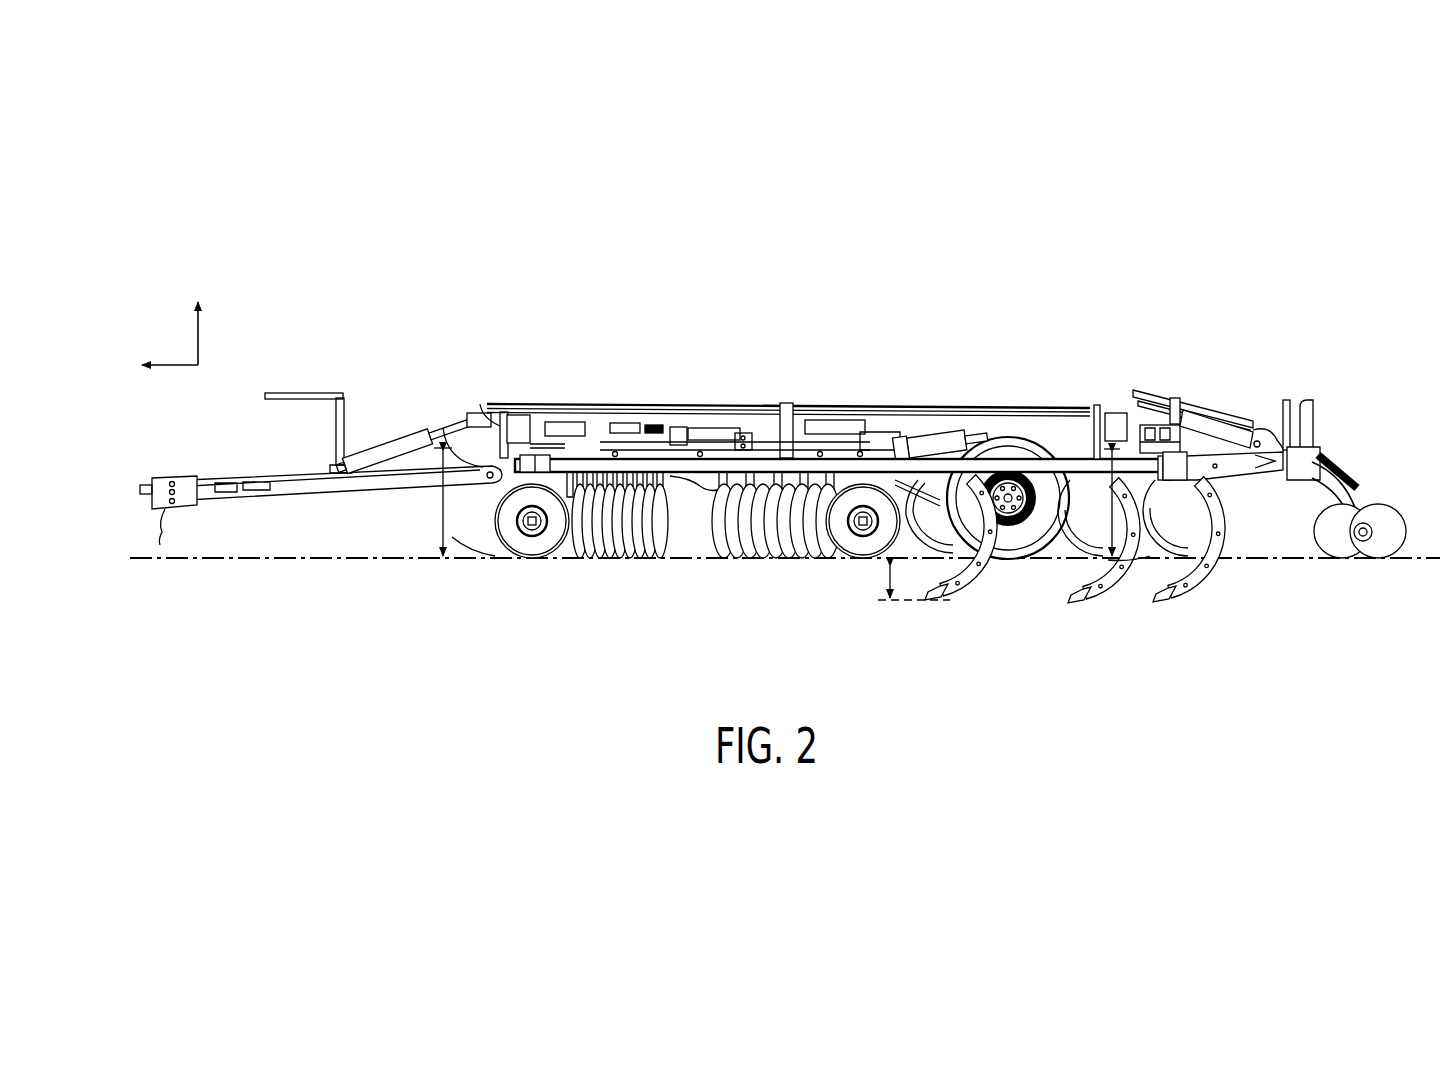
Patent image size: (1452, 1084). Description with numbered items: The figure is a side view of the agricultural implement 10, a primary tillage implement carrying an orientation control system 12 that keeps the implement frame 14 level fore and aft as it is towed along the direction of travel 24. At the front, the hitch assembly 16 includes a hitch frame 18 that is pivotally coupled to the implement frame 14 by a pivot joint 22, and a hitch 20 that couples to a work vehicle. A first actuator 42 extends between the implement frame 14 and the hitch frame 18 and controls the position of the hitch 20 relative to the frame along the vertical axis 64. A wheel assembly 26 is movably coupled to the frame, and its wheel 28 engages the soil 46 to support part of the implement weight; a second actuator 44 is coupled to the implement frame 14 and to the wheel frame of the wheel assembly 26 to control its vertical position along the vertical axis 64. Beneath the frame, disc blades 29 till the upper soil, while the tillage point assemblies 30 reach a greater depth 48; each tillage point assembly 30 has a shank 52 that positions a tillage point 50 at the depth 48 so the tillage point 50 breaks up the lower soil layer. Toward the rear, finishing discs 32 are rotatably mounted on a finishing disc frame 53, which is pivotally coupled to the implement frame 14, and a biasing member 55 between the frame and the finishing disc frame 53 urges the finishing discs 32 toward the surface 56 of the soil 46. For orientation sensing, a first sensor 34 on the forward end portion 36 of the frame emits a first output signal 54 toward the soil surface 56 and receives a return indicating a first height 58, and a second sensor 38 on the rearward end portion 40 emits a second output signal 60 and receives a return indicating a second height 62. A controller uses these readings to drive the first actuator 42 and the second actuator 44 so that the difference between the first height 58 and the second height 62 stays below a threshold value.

The agricultural implement 10 is at (456, 302).
The orientation control system 12 is at (321, 428).
The frame 14 is at (818, 423).
The hitch assembly 16 is at (344, 469).
The hitch frame 18 is at (378, 487).
The hitch 20 is at (175, 479).
The pivot joint 22 is at (487, 472).
The direction of travel 24 is at (186, 365).
The wheel assembly 26 is at (990, 447).
The wheel 28 is at (1027, 420).
The disc blades 29 is at (578, 579).
The tillage point assembly 30 is at (978, 604).
The finishing discs 32 is at (1391, 571).
The first sensor 34 is at (517, 405).
The forward end portion 36 is at (788, 402).
The second sensor 38 is at (1118, 420).
The rearward end portion 40 is at (1188, 415).
The first actuator 42 is at (383, 441).
The second actuator 44 is at (940, 432).
The soil 46 is at (356, 608).
The depth 48 is at (884, 586).
The tillage point 50 is at (942, 604).
The shank 52 is at (987, 567).
The finishing disc frame 53 is at (1235, 469).
The first output signal 54 is at (478, 543).
The biasing member 55 is at (1196, 414).
The surface 56 is at (240, 558).
The first height 58 is at (443, 502).
The second output signal 60 is at (1150, 561).
The second height 62 is at (1112, 500).
The vertical axis 64 is at (200, 363).